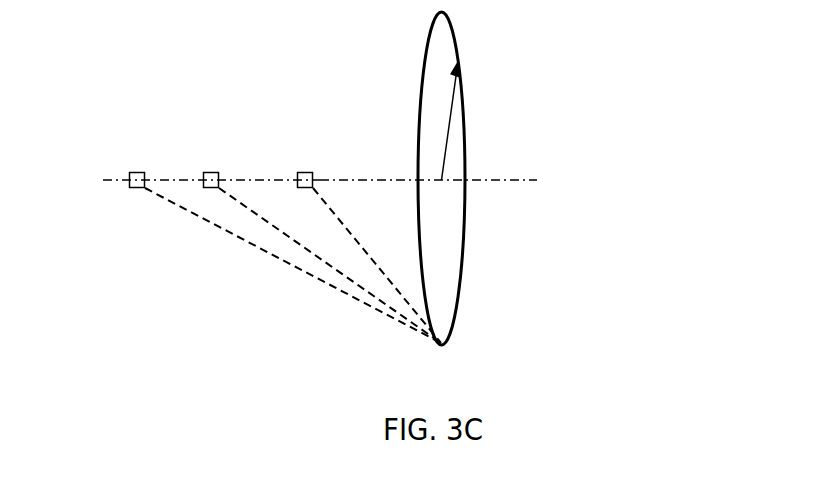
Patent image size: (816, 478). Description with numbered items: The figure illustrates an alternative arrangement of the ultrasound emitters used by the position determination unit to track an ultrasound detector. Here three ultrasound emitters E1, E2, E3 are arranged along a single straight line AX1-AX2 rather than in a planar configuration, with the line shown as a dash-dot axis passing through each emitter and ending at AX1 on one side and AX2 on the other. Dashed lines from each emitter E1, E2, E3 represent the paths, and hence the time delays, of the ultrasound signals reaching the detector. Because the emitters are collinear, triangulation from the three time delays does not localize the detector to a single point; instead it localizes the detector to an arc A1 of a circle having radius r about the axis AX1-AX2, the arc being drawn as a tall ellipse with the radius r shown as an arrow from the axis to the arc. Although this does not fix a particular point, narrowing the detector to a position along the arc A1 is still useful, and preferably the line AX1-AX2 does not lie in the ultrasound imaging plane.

The ultrasound emitter E1 is at (130, 173).
The ultrasound emitter E2 is at (203, 173).
The ultrasound emitter E3 is at (297, 173).
The straight line end point AX1 is at (186, 185).
The straight line end point AX2 is at (454, 185).
The arc A1 is at (460, 178).
The radius r is at (461, 109).